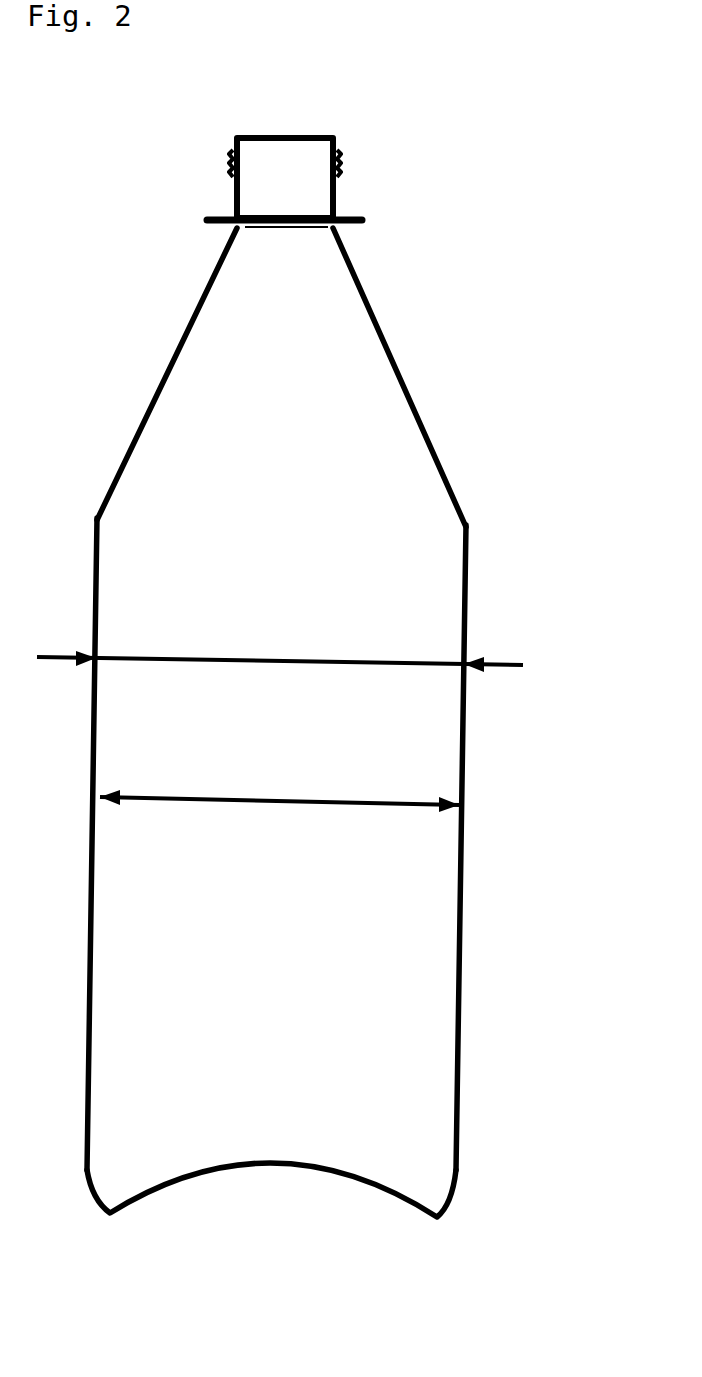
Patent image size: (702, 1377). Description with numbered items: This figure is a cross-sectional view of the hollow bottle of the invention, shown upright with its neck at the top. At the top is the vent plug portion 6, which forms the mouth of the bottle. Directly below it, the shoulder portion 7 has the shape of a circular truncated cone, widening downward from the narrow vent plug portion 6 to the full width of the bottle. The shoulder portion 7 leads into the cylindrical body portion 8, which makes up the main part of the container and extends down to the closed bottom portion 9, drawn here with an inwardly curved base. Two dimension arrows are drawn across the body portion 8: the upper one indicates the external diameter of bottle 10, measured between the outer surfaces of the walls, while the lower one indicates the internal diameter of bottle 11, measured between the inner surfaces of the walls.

The vent plug portion 6 is at (360, 178).
The shoulder portion 7 is at (420, 362).
The body portion 8 is at (392, 754).
The bottom portion 9 is at (360, 1205).
The external diameter of bottle 10 is at (312, 666).
The internal diameter of bottle 11 is at (309, 810).